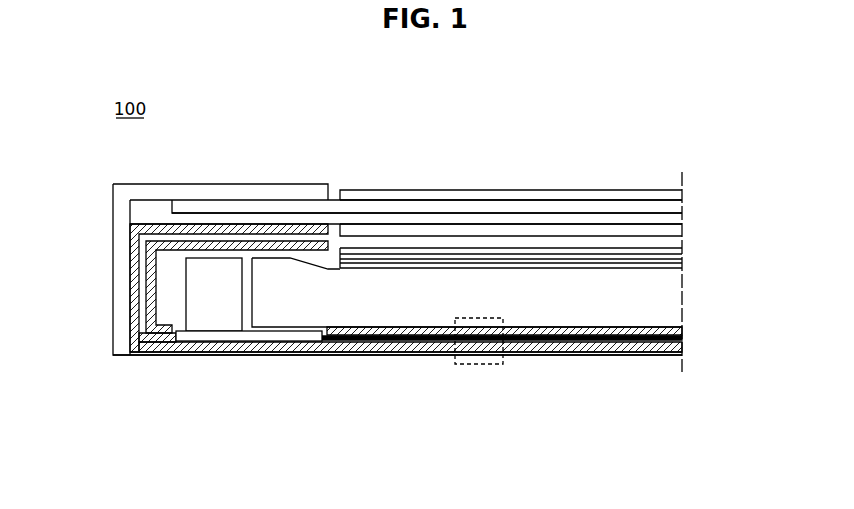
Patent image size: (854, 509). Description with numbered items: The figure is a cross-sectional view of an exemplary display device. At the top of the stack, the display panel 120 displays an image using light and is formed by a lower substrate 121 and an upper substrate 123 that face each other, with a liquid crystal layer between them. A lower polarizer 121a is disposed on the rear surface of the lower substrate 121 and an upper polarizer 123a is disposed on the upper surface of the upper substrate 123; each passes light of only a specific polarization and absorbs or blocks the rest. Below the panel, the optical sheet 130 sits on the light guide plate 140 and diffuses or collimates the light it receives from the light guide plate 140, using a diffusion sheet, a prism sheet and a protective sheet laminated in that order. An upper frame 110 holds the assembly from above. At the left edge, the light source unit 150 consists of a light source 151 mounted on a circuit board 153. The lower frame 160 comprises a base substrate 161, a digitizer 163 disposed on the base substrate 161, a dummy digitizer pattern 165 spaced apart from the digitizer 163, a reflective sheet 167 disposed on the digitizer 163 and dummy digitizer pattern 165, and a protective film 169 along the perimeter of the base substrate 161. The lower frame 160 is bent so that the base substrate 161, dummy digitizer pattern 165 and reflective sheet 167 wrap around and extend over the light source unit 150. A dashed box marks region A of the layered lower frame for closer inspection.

The upper frame 110 is at (122, 234).
The display panel 120 is at (406, 165).
The upper polarizer 123a is at (390, 195).
The upper substrate 123 is at (440, 208).
The lower substrate 121 is at (487, 222).
The lower polarizer 121a is at (392, 119).
The optical sheet 130 is at (680, 266).
The light guide plate 140 is at (662, 297).
The light source unit 150 is at (249, 344).
The light source 151 is at (210, 311).
The circuit board 153 is at (211, 395).
The lower frame 160 is at (454, 350).
The base substrate 161 is at (675, 346).
The digitizer 163 is at (675, 337).
The dummy digitizer pattern 165 is at (147, 264).
The reflective sheet 167 is at (153, 292).
The protective film 169 is at (431, 367).
The enlarged region A is at (479, 364).